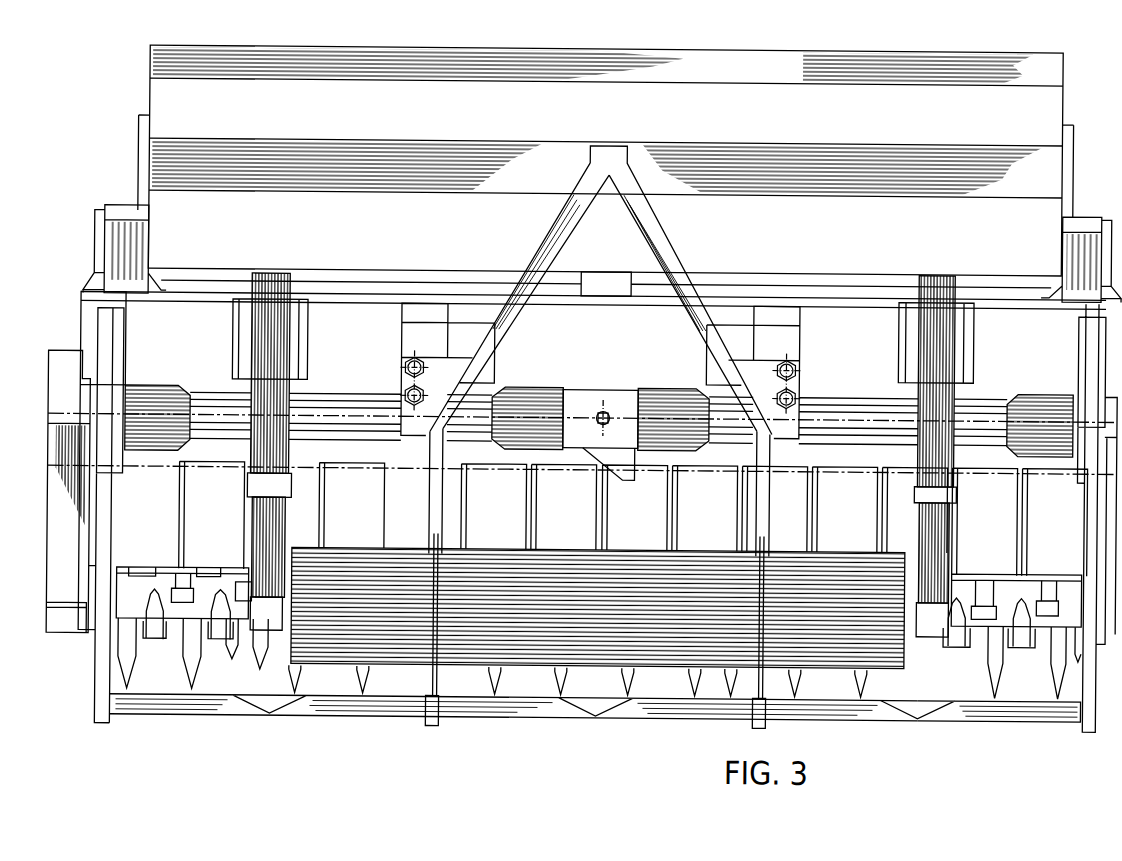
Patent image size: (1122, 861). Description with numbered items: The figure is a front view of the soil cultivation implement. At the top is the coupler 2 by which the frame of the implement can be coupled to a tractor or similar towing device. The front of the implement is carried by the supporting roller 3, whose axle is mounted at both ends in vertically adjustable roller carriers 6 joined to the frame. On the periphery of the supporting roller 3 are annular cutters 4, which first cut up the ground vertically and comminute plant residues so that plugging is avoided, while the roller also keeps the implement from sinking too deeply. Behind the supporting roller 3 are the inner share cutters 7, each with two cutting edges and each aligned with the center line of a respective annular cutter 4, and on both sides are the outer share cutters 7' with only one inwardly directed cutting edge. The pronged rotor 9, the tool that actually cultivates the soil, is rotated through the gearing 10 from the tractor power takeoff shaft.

The coupler 2 is at (707, 310).
The supporting roller 3 is at (332, 633).
The annular cutters 4 is at (436, 635).
The roller carriers 6 is at (272, 608).
The share cutters 7 is at (513, 740).
The outer share cutters 7' is at (980, 741).
The pronged rotor 9 is at (207, 611).
The gearing 10 is at (591, 402).